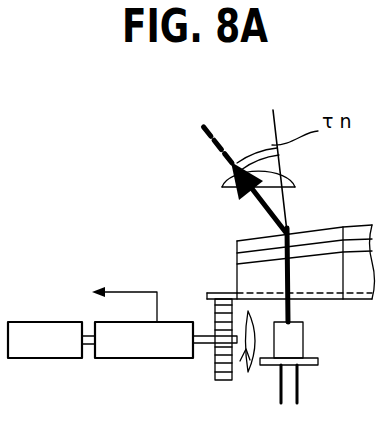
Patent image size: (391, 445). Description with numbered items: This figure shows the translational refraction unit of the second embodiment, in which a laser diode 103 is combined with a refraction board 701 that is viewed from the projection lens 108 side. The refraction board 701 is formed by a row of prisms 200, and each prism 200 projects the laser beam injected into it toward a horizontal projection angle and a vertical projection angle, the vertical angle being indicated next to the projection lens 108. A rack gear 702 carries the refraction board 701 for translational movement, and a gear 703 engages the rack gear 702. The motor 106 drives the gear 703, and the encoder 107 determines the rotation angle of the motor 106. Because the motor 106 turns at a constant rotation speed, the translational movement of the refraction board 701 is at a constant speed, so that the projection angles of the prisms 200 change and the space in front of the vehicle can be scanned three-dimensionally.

The laser diode 103 is at (300, 366).
The motor 106 is at (55, 359).
The encoder 107 is at (142, 359).
The projection lens 108 is at (276, 176).
The prism 200 is at (268, 238).
The refraction board 701 is at (309, 223).
The rack gear 702 is at (213, 292).
The gear 703 is at (220, 363).